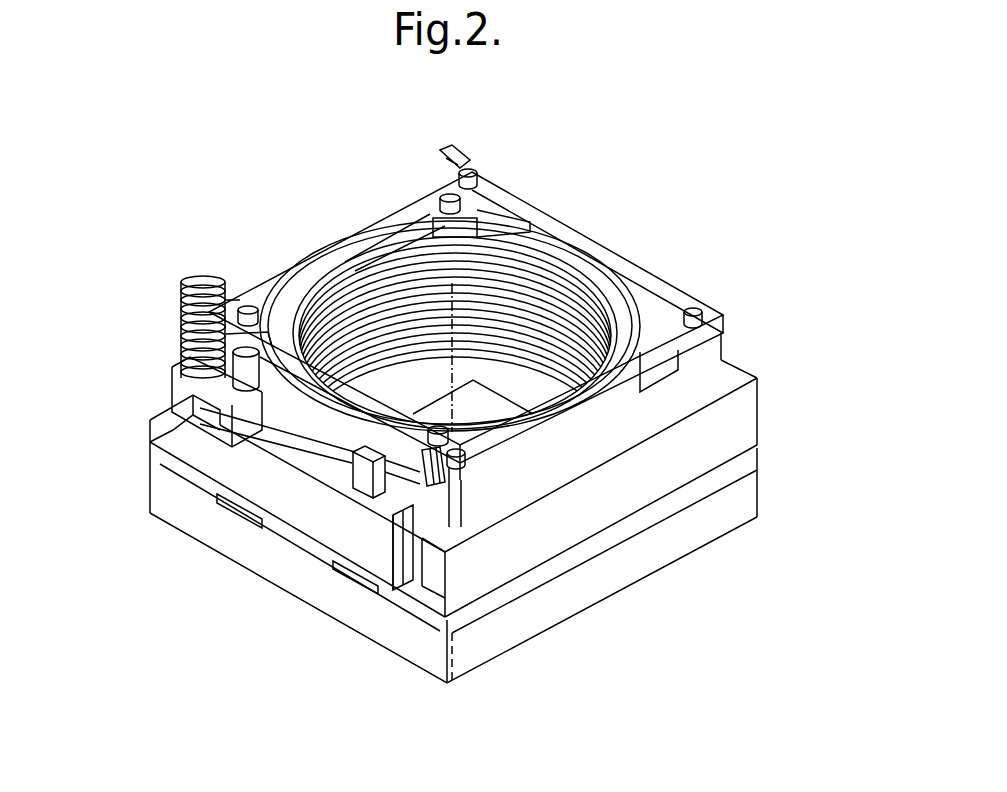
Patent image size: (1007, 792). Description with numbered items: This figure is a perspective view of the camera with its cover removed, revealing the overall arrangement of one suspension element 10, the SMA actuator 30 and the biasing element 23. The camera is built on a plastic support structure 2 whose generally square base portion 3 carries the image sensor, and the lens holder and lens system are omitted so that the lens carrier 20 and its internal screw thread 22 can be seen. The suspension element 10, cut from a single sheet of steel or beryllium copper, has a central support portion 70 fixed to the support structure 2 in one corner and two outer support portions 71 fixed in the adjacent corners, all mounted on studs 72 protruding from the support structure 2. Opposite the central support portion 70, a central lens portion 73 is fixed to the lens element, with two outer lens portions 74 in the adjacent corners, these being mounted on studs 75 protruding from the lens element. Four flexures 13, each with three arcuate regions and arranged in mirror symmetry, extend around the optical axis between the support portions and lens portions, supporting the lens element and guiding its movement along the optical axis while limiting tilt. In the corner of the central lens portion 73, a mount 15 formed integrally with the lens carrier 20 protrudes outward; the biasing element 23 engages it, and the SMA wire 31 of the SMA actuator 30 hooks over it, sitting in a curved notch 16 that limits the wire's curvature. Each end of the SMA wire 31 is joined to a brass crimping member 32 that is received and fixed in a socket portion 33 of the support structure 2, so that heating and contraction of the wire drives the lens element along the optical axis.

The support structure 2 is at (737, 425).
The base portion 3 is at (655, 548).
The suspension element 10 is at (668, 310).
The flexure 13 is at (185, 364).
The mount 15 is at (176, 383).
The notch 16 is at (180, 430).
The lens carrier 20 is at (568, 253).
The internal screw thread 22 is at (520, 253).
The biasing element 23 is at (181, 296).
The SMA actuator 30 is at (412, 183).
The SMA wire 31 is at (275, 440).
The crimping member 32 is at (452, 160).
The socket portion 33 is at (395, 540).
The central support portion 70 is at (688, 335).
The outer support portion 71 is at (490, 183).
The stud 72 is at (468, 170).
The central lens portion 73 is at (266, 308).
The outer lens portion 74 is at (433, 212).
The stud 75 is at (448, 195).